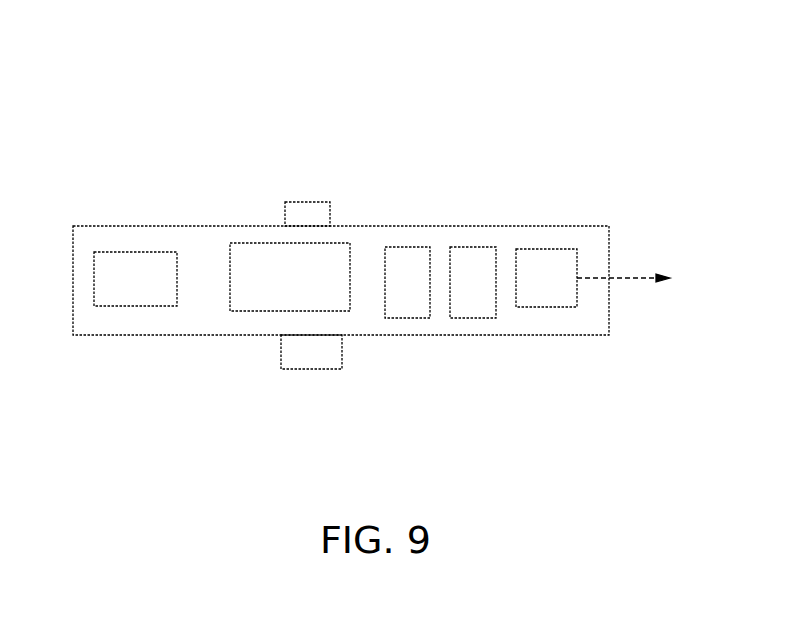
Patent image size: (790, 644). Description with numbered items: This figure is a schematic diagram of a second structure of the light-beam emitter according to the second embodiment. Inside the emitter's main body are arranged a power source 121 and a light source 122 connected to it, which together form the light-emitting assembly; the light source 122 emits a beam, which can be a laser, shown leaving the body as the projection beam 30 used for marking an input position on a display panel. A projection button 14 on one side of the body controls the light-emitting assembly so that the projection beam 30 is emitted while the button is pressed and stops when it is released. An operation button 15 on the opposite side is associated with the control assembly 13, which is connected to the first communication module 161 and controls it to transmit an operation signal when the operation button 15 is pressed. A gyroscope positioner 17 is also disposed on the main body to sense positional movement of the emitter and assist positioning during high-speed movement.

The power source 121 is at (131, 283).
The light source 122 is at (553, 276).
The control assembly 13 is at (262, 290).
The projection button 14 is at (313, 213).
The operation button 15 is at (320, 350).
The first communication module 161 is at (410, 270).
The gyroscope positioner 17 is at (478, 268).
The projection beam 30 is at (643, 282).